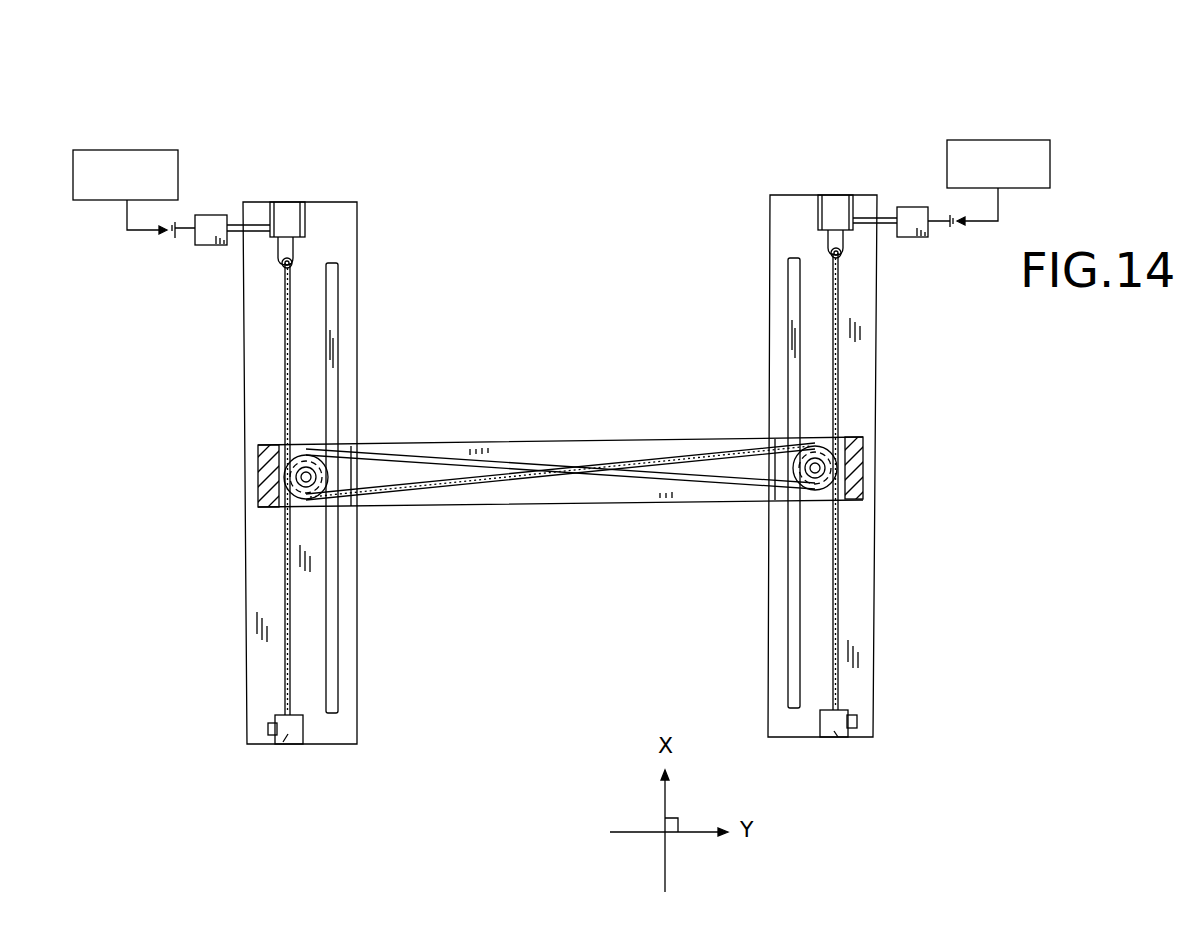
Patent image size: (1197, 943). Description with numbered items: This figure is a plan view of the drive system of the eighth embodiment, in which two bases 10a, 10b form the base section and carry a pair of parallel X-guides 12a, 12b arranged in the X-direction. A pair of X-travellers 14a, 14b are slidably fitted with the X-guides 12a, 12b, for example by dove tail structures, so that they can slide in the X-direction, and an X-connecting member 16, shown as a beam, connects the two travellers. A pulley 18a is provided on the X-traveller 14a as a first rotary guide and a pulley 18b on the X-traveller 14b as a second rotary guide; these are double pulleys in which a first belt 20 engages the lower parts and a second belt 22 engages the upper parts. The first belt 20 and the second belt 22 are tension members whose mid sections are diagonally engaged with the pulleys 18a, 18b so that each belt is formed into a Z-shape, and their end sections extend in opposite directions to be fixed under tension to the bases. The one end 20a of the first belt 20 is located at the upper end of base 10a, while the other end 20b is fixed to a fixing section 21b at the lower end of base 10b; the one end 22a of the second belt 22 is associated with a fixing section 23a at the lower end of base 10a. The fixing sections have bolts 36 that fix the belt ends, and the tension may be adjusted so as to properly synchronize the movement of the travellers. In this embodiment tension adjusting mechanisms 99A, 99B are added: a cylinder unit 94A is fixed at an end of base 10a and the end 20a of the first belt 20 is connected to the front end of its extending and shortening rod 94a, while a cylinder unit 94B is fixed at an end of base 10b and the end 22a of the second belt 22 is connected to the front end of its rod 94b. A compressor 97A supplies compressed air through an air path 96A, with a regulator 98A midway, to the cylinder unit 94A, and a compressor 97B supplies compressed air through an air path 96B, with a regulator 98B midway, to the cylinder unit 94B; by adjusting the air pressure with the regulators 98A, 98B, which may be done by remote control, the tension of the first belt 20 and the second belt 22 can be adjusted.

The base 10a is at (253, 363).
The base 10b is at (865, 310).
The X-guide 12a is at (333, 297).
The X-guide 12b is at (792, 285).
The X-traveller 14a is at (270, 447).
The X-traveller 14b is at (853, 440).
The X-connecting member 16 is at (612, 448).
The pulley 18a is at (283, 493).
The pulley 18b is at (843, 512).
The first belt 20 is at (465, 485).
The second belt 22 is at (447, 460).
The one end section of the first belt 20a is at (283, 262).
The other end section of the first belt 20b is at (848, 710).
The one end section of the second belt 22a is at (843, 253).
The fixing section 23a is at (283, 742).
The fixing section 21b is at (838, 737).
The bolt 36 is at (857, 722).
The cylinder unit 94A is at (288, 212).
The cylinder unit 94B is at (835, 202).
The rod 94a is at (295, 248).
The rod 94b is at (830, 243).
The air path 96A is at (255, 225).
The air path 96B is at (937, 218).
The compressor 97A is at (128, 148).
The compressor 97B is at (1018, 138).
The regulator 98A is at (210, 218).
The regulator 98B is at (912, 207).
The tension adjusting mechanism 99A is at (372, 122).
The tension adjusting mechanism 99B is at (868, 88).